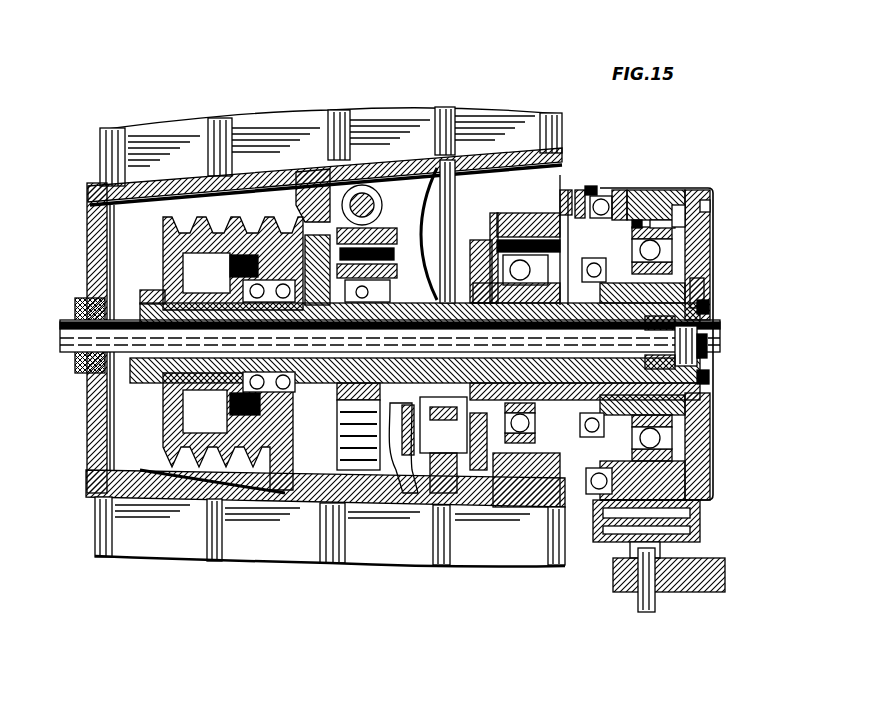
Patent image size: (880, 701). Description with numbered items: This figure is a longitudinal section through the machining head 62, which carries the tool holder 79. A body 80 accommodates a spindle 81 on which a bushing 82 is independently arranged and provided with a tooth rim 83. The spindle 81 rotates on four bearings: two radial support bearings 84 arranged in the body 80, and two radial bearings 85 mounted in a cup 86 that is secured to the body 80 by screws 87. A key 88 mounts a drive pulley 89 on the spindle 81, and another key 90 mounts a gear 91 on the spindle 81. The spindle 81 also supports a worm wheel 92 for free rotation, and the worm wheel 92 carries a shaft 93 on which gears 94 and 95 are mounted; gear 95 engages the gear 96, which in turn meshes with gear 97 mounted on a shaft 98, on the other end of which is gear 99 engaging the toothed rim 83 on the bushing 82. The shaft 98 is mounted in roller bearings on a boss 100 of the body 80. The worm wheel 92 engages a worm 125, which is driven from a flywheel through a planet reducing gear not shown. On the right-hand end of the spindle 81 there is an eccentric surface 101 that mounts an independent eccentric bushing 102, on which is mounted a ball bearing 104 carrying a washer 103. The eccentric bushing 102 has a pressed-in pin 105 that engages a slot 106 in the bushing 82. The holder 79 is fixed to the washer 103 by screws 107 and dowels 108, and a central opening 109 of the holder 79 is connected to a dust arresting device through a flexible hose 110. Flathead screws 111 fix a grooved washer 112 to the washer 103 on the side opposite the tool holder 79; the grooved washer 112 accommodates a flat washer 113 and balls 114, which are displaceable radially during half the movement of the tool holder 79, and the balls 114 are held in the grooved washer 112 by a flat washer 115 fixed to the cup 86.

The machining head 62 is at (84, 494).
The tool holder 79 is at (703, 278).
The body 80 is at (117, 128).
The spindle 81 is at (410, 157).
The bushing 82 is at (533, 227).
The tooth rim 83 is at (487, 250).
The radial support bearings 84 is at (204, 215).
The radial bearings 85 is at (578, 188).
The cup 86 is at (558, 200).
The screws 87 is at (614, 190).
The key 88 is at (96, 242).
The drive pulley 89 is at (177, 177).
The key 90 is at (272, 468).
The gear 91 is at (293, 500).
The worm wheel 92 is at (365, 480).
The shaft 93 is at (283, 197).
The gear 94 is at (253, 227).
The gear 95 is at (372, 190).
The gear 96 is at (413, 490).
The gear 97 is at (412, 470).
The shaft 98 is at (477, 500).
The gear 99 is at (512, 500).
The boss 100 is at (450, 500).
The eccentric surface 101 is at (682, 314).
The eccentric bushing 102 is at (690, 292).
The washer 103 is at (697, 188).
The ball bearing 104 is at (712, 224).
The pin 105 is at (668, 278).
The slot 106 is at (692, 345).
The screws 107 is at (713, 196).
The dowels 108 is at (708, 456).
The central opening 109 is at (708, 360).
The flexible hose 110 is at (76, 326).
The flathead screws 111 is at (677, 188).
The grooved washer 112 is at (590, 185).
The flat washer 113 is at (657, 188).
The balls 114 is at (637, 188).
The flat washer 115 is at (597, 192).
The worm 125 is at (313, 157).